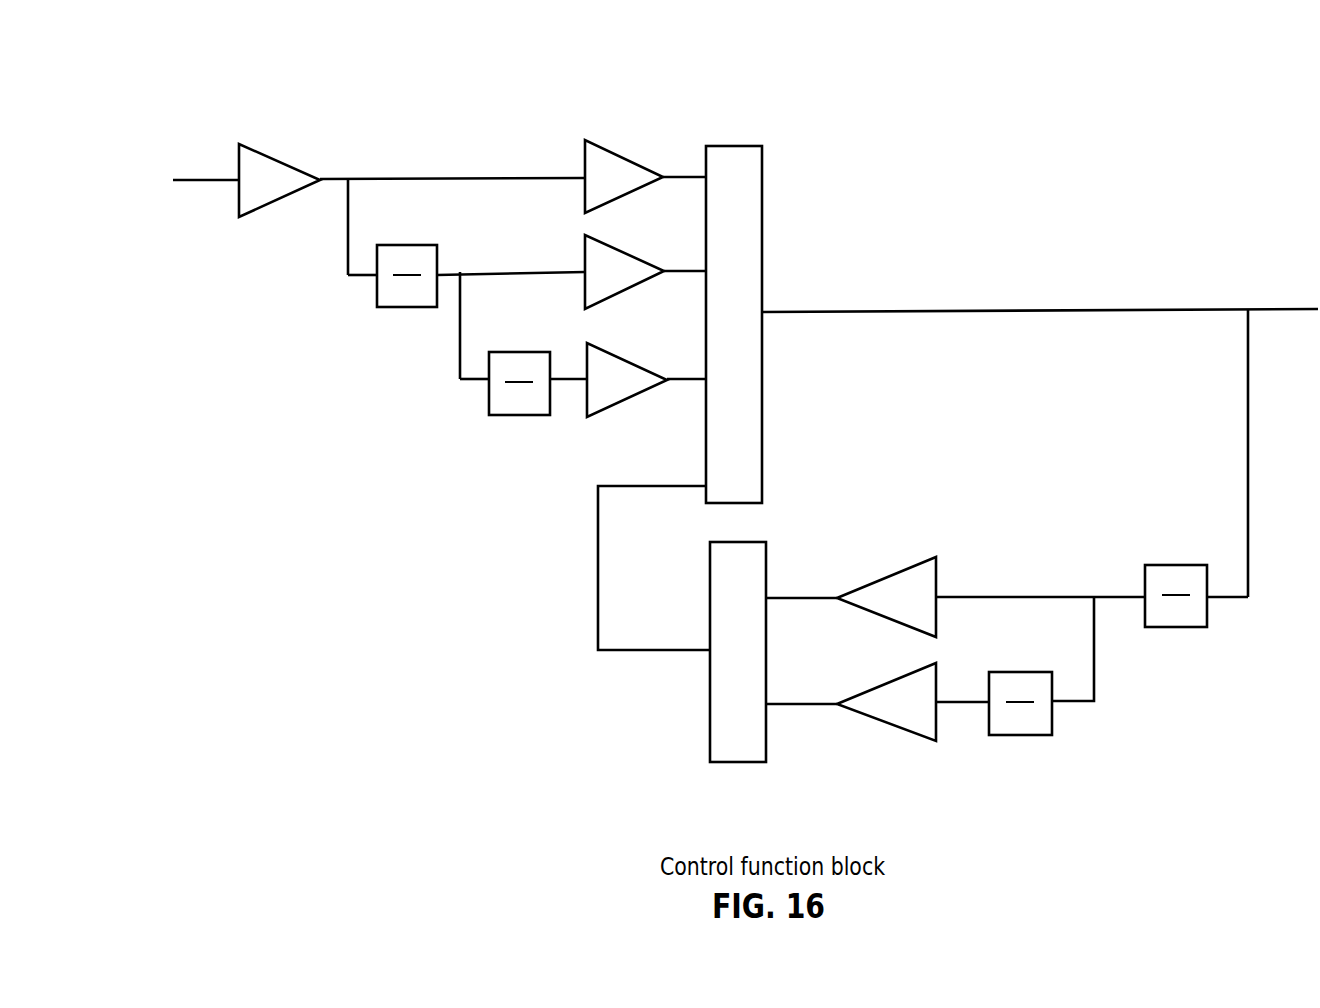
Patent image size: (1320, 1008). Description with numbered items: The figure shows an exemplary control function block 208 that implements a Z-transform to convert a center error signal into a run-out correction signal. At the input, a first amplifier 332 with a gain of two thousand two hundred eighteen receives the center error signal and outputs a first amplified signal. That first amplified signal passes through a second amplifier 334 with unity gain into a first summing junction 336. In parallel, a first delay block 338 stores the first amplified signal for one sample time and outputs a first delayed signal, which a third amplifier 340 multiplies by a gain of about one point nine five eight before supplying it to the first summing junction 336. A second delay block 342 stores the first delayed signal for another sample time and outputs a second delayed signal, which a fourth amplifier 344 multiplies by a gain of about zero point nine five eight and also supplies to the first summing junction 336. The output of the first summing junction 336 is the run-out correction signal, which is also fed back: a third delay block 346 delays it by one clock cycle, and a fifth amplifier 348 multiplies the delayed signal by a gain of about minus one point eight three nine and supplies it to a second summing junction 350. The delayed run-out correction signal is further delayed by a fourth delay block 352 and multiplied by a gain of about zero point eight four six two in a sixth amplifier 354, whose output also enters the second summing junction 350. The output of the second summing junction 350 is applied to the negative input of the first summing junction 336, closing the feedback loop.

The control function block 208 is at (237, 112).
The first amplifier 332 is at (268, 156).
The second amplifier 334 is at (616, 151).
The first summing junction 336 is at (733, 146).
The first delay block 338 is at (410, 245).
The third amplifier 340 is at (617, 250).
The second delay block 342 is at (527, 352).
The fourth amplifier 344 is at (618, 358).
The third delay block 346 is at (1177, 565).
The fifth amplifier 348 is at (937, 563).
The second summing junction 350 is at (753, 542).
The fourth delay block 352 is at (1030, 672).
The sixth amplifier 354 is at (937, 669).